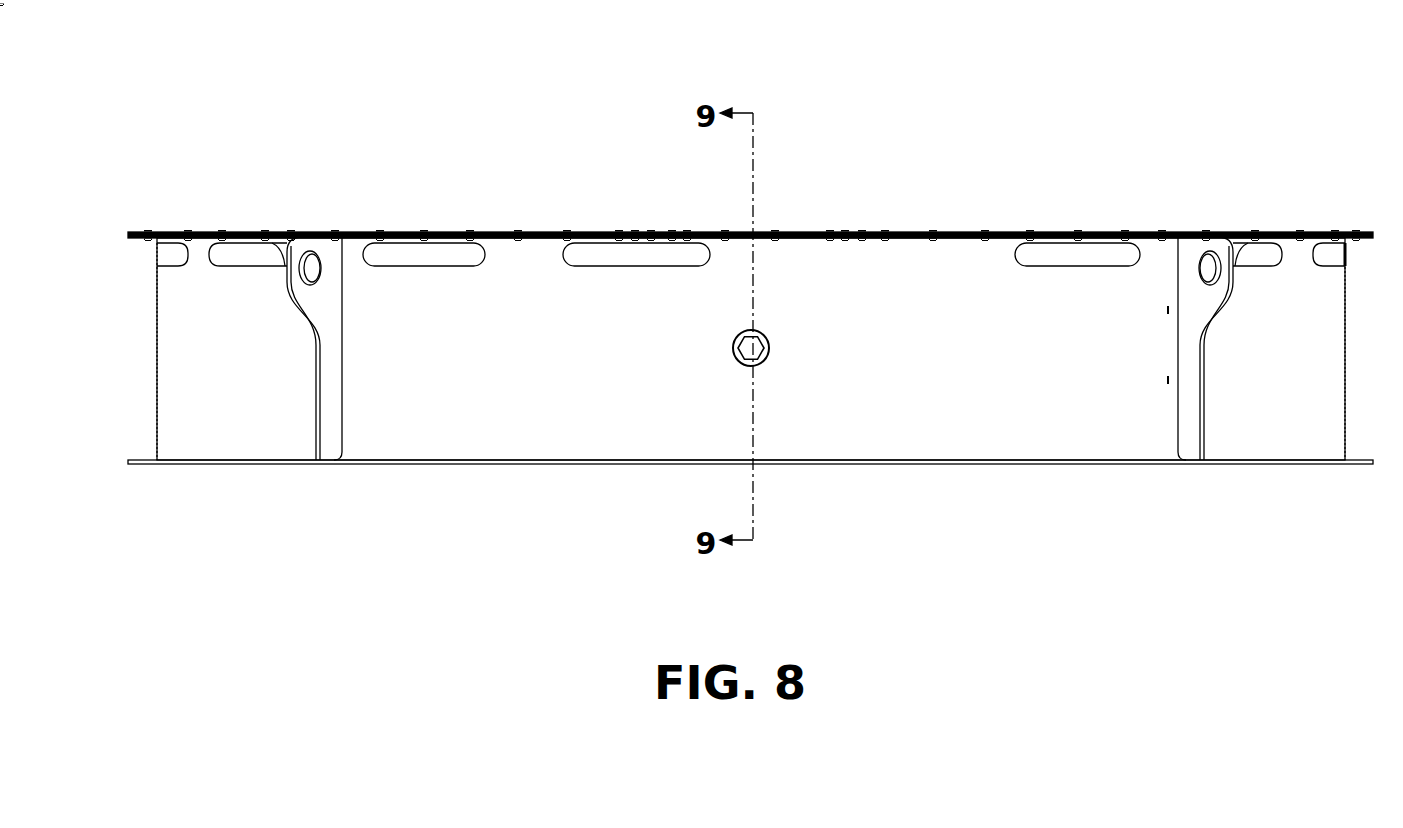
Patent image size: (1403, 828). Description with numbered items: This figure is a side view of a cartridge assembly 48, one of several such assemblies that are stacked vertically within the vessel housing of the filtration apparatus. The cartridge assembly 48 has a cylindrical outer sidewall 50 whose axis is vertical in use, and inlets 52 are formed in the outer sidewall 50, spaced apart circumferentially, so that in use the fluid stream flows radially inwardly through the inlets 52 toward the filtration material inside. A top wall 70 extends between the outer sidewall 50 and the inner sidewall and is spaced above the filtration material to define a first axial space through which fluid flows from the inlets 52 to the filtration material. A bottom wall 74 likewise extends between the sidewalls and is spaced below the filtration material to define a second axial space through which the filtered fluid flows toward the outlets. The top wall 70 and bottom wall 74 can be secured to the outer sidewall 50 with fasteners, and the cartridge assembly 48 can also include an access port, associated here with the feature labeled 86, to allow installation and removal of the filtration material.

The cartridge assembly 48 is at (232, 99).
The outer sidewall 50 is at (546, 350).
The inlets 52 is at (445, 255).
The top wall 70 is at (900, 232).
The bottom wall 74 is at (905, 464).
The fastener 86 is at (768, 342).